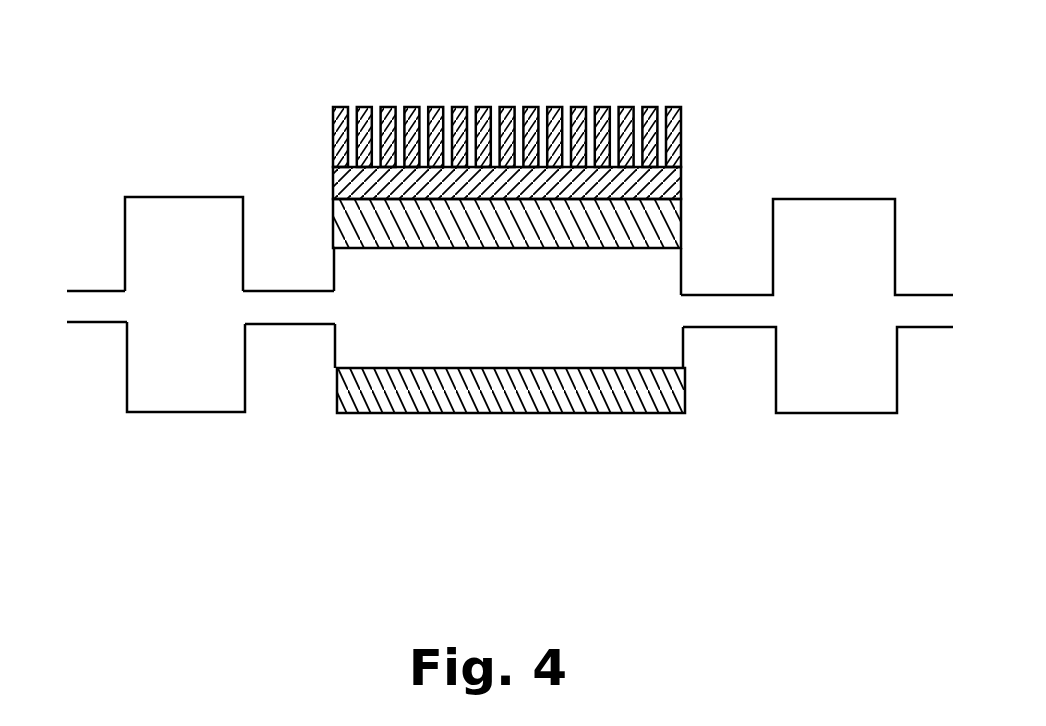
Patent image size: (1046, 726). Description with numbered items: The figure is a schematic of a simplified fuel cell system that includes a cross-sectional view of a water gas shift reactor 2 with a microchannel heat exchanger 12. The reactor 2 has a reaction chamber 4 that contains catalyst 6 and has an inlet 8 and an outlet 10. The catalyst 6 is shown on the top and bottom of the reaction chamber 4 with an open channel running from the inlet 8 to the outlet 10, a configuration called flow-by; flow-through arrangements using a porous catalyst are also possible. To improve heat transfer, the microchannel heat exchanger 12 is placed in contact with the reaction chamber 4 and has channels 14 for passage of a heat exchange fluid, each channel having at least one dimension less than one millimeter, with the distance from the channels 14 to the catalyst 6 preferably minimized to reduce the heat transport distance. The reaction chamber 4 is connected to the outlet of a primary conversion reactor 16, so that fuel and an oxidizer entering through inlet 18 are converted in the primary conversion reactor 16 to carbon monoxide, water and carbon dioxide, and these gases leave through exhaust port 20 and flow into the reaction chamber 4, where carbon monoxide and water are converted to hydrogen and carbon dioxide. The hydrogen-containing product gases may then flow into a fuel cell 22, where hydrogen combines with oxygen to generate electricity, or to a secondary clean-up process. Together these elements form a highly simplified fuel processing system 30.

The reactor 2 is at (628, 428).
The reaction chamber 4 is at (410, 345).
The catalyst 6 is at (681, 205).
The inlet 8 is at (335, 308).
The outlet 10 is at (692, 317).
The microchannel heat exchanger 12 is at (460, 111).
The channels 14 is at (470, 122).
The primary conversion reactor 16 is at (162, 220).
The inlet 18 is at (75, 310).
The exhaust port 20 is at (243, 302).
The fuel cell 22 is at (795, 398).
The fuel processing system 30 is at (322, 472).